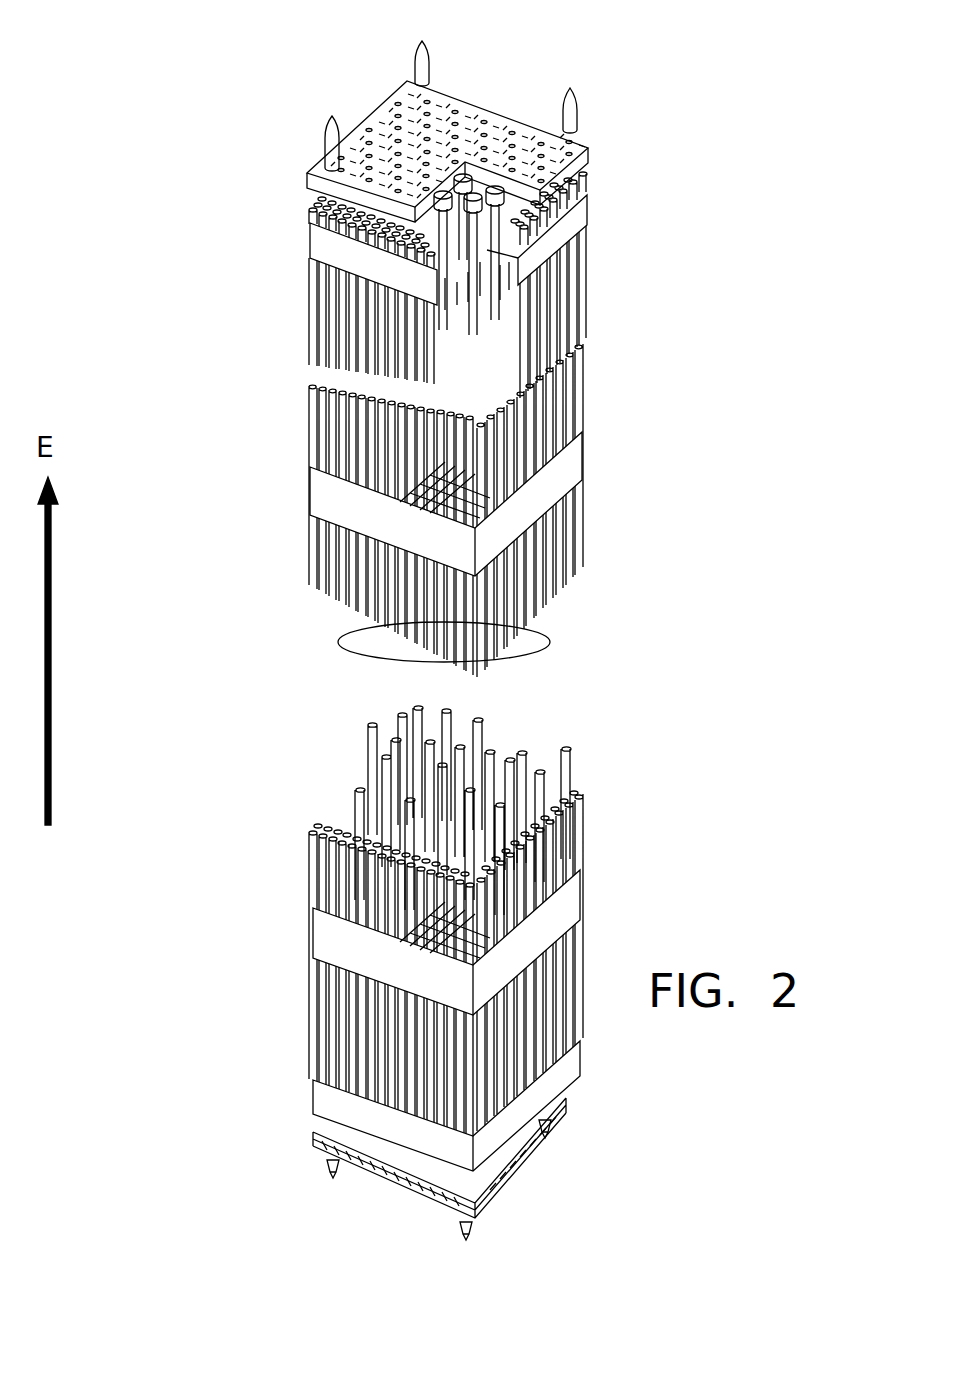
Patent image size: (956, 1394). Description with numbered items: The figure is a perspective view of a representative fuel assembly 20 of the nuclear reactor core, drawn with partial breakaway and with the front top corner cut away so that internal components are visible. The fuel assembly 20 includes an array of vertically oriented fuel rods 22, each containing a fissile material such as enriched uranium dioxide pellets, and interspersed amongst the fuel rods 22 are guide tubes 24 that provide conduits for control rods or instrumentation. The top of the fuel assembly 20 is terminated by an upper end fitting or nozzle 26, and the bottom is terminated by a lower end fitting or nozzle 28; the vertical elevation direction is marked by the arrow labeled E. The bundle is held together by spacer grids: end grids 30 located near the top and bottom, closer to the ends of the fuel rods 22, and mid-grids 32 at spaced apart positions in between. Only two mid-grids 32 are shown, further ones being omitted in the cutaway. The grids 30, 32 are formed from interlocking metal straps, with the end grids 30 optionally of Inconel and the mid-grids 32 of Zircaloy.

The fuel assembly 20 is at (678, 491).
The fuel rods 22 is at (345, 599).
The guide tubes 24 is at (556, 636).
The upper end fitting or nozzle 26 is at (495, 100).
The lower end fitting or nozzle 28 is at (513, 1163).
The end grids 30 is at (318, 237).
The mid-grids 32 is at (320, 490).